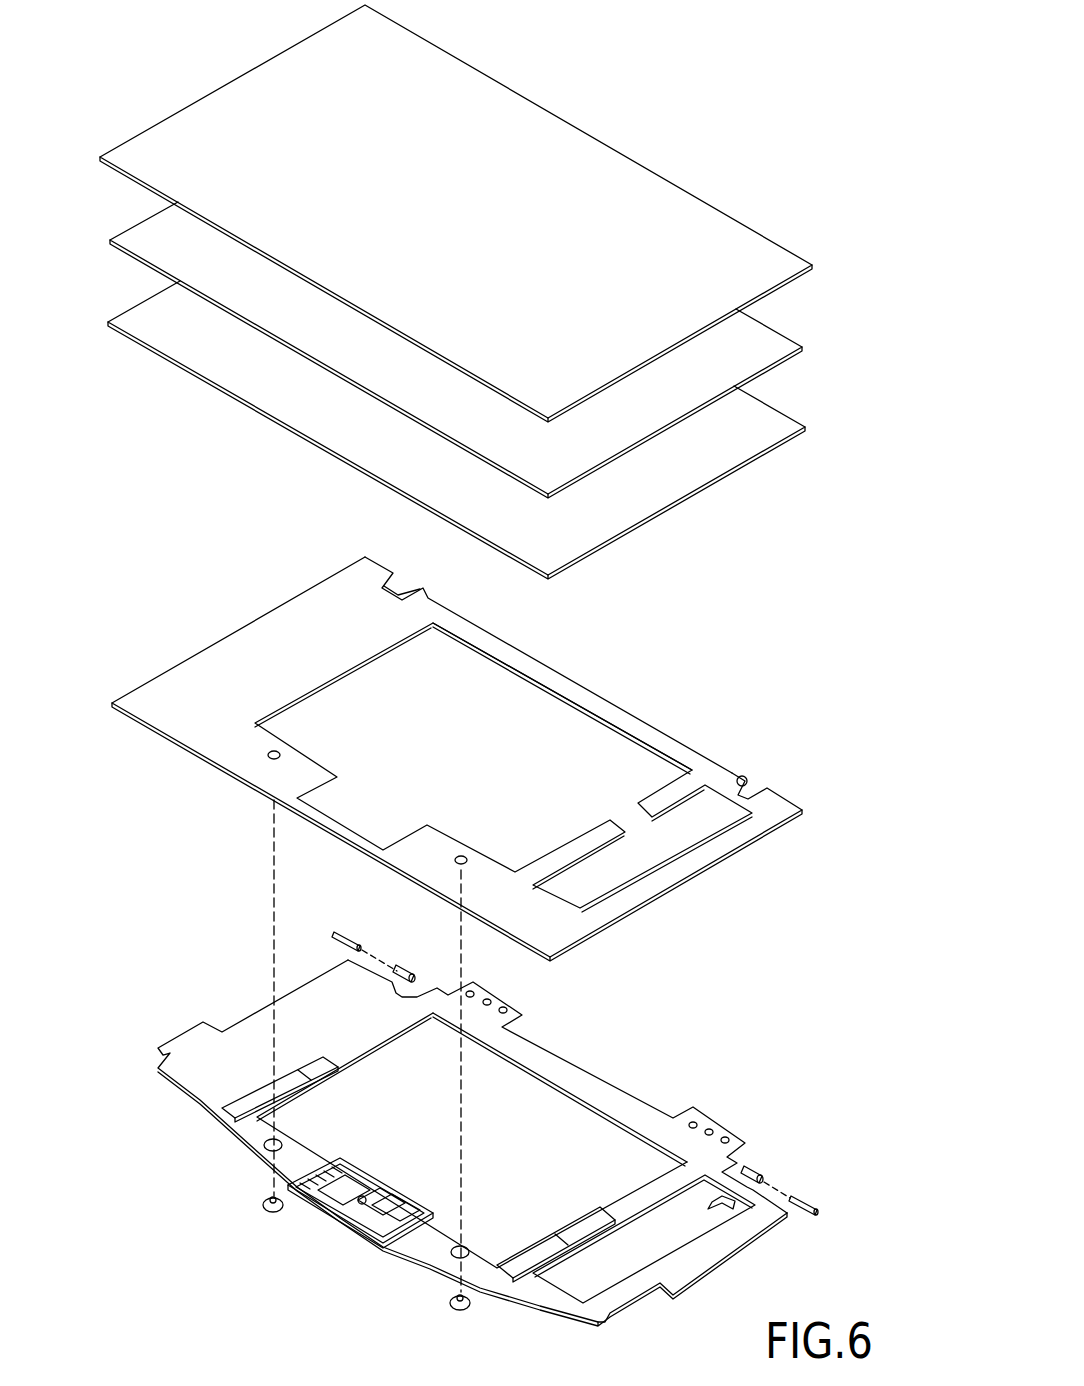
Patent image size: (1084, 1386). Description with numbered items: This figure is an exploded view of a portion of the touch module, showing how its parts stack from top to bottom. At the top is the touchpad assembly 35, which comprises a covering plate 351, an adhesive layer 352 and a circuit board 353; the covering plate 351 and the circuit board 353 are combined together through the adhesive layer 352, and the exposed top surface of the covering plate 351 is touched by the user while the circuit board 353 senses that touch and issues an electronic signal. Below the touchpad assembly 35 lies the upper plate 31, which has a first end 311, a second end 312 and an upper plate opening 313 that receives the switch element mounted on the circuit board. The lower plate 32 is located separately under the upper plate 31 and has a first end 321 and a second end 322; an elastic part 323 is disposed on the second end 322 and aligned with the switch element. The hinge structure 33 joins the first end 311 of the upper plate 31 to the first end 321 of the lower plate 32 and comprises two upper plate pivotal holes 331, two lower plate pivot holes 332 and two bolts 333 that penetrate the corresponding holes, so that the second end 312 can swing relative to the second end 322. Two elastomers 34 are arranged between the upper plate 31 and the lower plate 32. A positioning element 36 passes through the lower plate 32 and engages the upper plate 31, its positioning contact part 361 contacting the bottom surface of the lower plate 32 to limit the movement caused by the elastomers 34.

The upper plate 31 is at (457, 759).
The first end of the upper plate 311 is at (580, 697).
The second end of the upper plate 312 is at (338, 832).
The upper plate opening 313 is at (370, 806).
The lower plate 32 is at (472, 1143).
The first end of the lower plate 321 is at (582, 1085).
The second end of the lower plate 322 is at (432, 1248).
The elastic part 323 is at (337, 1215).
The hinge structure 33 is at (611, 870).
The upper plate pivotal hole 331 is at (410, 583).
The lower plate pivot hole 332 is at (440, 960).
The bolt 333 is at (350, 937).
The elastomer 34 is at (255, 1100).
The touchpad assembly 35 is at (502, 292).
The covering plate 351 is at (760, 248).
The adhesive layer 352 is at (760, 340).
The circuit board 353 is at (478, 430).
The positioning element 36 is at (356, 1264).
The positioning contact part 361 is at (268, 1200).